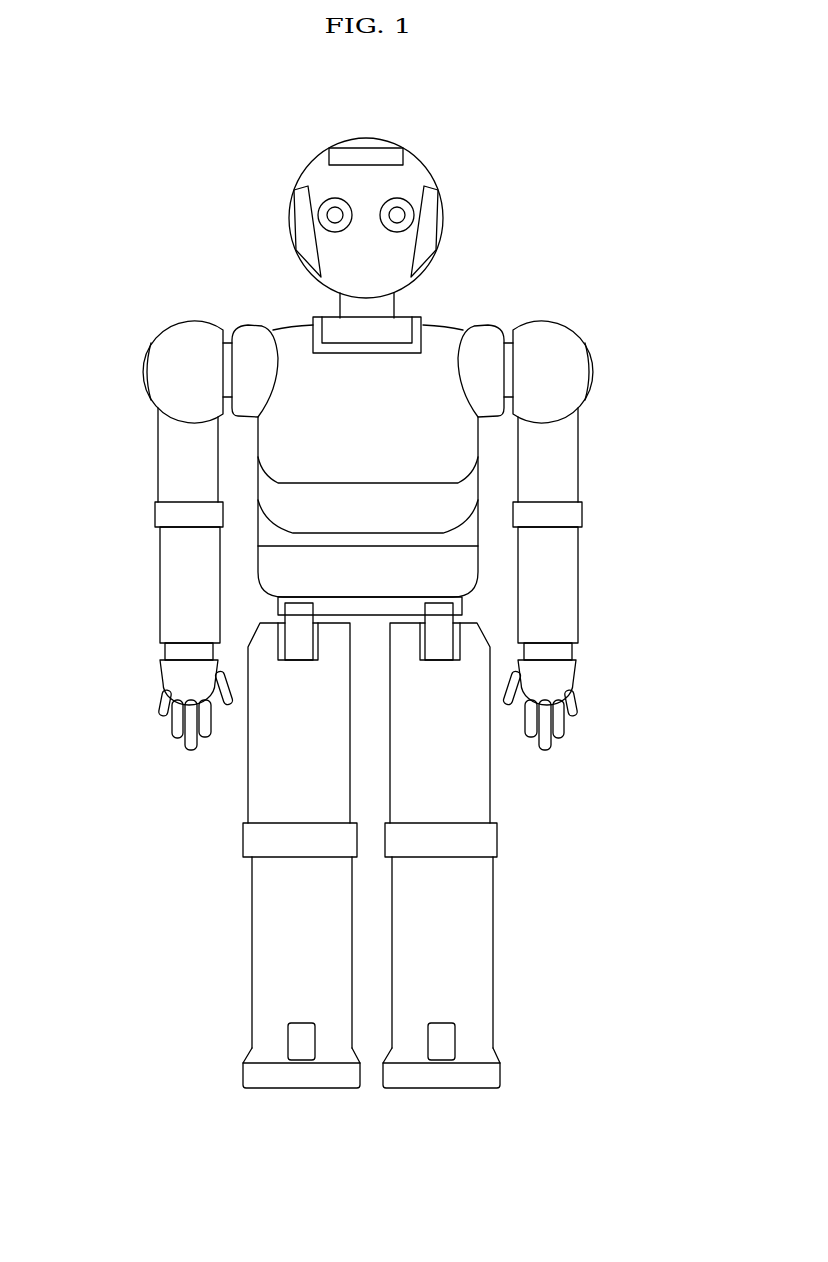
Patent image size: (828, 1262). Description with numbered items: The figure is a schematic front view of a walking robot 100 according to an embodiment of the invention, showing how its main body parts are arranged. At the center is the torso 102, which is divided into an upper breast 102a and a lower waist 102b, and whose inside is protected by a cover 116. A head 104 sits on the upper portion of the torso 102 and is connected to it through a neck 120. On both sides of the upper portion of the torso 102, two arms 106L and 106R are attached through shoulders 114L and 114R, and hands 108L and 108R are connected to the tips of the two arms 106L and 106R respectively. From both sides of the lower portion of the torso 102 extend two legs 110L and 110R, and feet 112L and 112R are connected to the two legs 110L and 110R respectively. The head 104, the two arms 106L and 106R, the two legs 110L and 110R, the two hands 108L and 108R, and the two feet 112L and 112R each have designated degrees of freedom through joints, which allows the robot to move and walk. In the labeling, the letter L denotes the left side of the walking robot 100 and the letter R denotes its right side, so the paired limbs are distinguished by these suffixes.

The walking robot 100 is at (372, 583).
The torso 102 is at (667, 480).
The breast 102a is at (461, 502).
The waist 102b is at (461, 541).
The head 104 is at (380, 187).
The right arm 106R is at (125, 534).
The left arm 106L is at (614, 534).
The right hand 108R is at (172, 680).
The left hand 108L is at (567, 677).
The right leg 110R is at (225, 825).
The left leg 110L is at (518, 825).
The right foot 112R is at (243, 1067).
The left foot 112L is at (497, 1068).
The right shoulder 114R is at (210, 325).
The left shoulder 114L is at (525, 324).
The cover 116 is at (478, 435).
The neck 120 is at (406, 313).